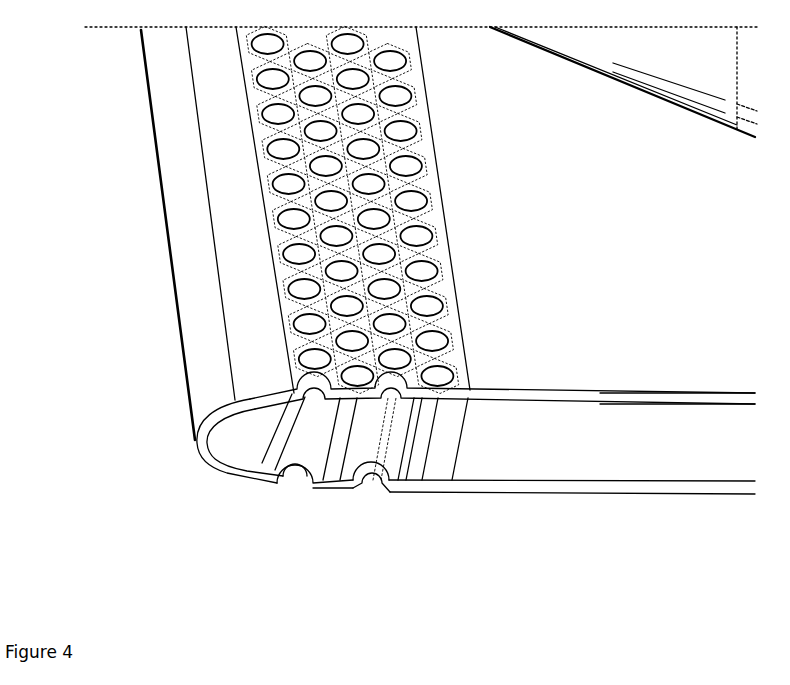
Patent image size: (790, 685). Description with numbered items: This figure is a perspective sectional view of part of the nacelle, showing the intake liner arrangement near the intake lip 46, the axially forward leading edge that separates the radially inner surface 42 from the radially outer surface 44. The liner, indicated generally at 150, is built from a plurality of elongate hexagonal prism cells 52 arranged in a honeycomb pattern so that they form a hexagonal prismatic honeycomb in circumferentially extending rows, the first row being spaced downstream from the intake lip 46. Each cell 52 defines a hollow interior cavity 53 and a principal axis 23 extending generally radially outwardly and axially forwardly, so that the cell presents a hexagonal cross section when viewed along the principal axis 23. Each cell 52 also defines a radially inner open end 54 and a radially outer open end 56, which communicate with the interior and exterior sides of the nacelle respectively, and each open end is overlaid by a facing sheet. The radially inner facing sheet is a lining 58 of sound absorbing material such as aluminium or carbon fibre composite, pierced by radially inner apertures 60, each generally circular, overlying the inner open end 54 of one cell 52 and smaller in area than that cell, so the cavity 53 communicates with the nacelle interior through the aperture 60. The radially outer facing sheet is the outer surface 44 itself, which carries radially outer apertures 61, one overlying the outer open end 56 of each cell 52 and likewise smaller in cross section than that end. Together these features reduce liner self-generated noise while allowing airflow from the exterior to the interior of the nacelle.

The intake lip 46 is at (163, 222).
The perforated panel 150 is at (404, 210).
The radially inner aperture 60 is at (421, 295).
The lining 58 is at (460, 320).
The radially inner open end 54 is at (468, 393).
The radially outer open end 56 is at (387, 463).
The hexagonal prism cell 52 is at (213, 463).
The hollow interior cavity 53 is at (298, 473).
The principal axis 23 is at (370, 482).
The radially outer aperture 61 is at (385, 487).
The radially outer surface 44 is at (570, 490).
The radially inner surface 42 is at (602, 392).